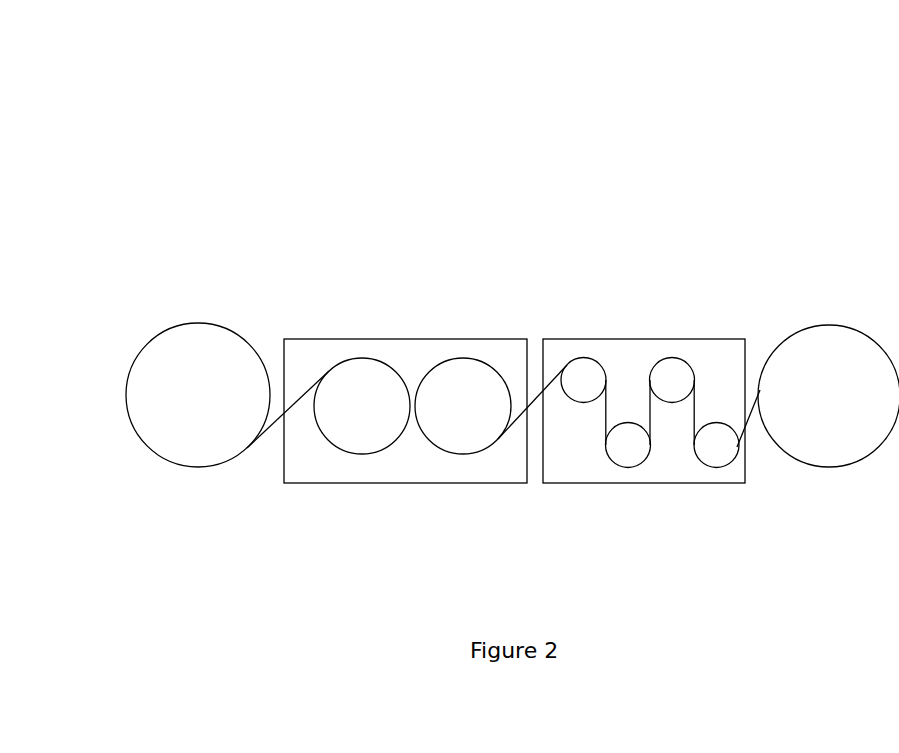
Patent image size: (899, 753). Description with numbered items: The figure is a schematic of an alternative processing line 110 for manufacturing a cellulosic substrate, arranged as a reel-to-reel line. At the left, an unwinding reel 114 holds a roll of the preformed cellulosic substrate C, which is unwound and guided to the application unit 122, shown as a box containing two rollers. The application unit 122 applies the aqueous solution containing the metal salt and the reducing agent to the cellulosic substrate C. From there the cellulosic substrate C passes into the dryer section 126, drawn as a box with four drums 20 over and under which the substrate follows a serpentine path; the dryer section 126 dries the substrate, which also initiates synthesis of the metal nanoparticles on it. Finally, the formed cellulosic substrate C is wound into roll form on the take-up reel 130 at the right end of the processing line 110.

The processing line 110 is at (128, 84).
The unwinding reel 114 is at (200, 323).
The application unit 122 is at (397, 338).
The dryer section 126 is at (637, 410).
The drums 20 is at (593, 392).
The take-up reel 130 is at (842, 338).
The cellulosic substrate C is at (335, 367).